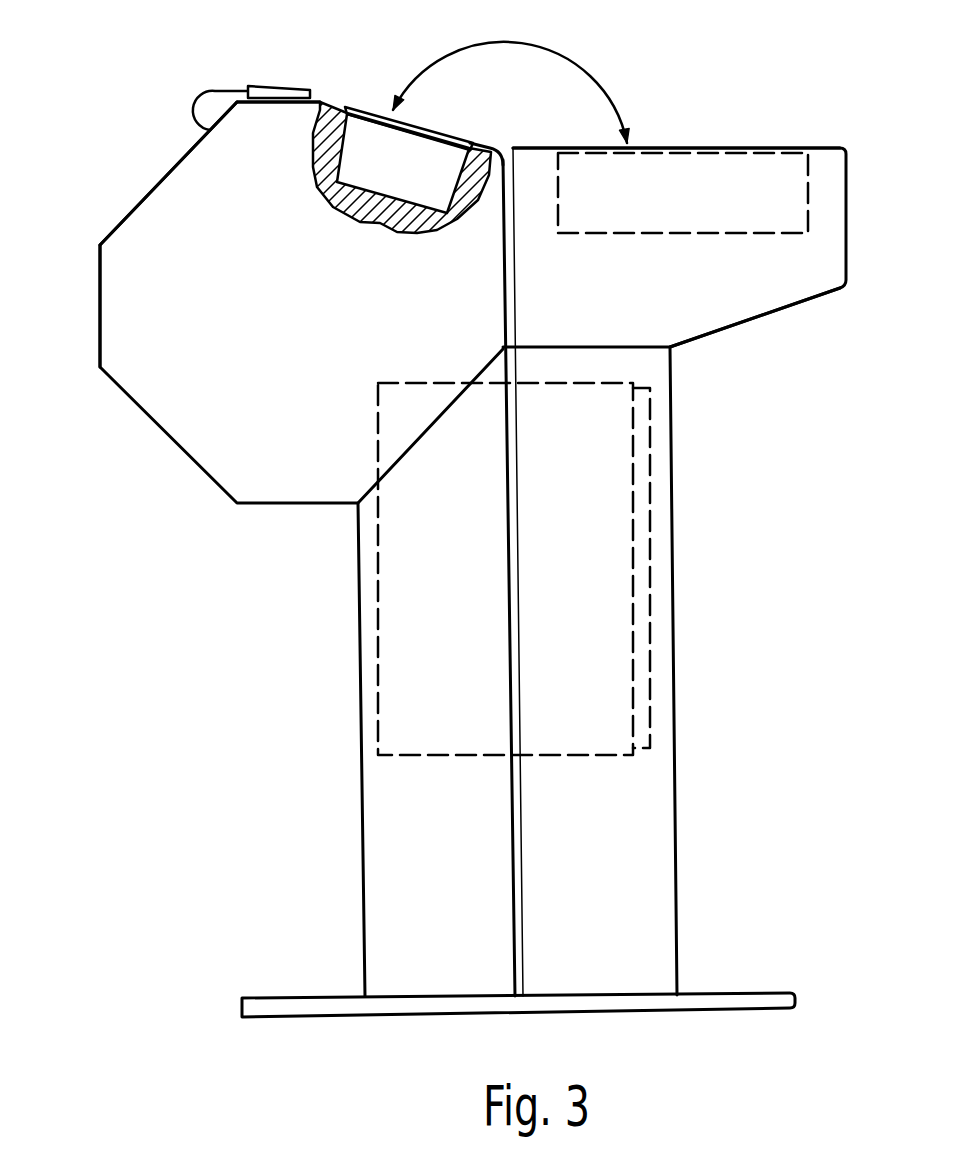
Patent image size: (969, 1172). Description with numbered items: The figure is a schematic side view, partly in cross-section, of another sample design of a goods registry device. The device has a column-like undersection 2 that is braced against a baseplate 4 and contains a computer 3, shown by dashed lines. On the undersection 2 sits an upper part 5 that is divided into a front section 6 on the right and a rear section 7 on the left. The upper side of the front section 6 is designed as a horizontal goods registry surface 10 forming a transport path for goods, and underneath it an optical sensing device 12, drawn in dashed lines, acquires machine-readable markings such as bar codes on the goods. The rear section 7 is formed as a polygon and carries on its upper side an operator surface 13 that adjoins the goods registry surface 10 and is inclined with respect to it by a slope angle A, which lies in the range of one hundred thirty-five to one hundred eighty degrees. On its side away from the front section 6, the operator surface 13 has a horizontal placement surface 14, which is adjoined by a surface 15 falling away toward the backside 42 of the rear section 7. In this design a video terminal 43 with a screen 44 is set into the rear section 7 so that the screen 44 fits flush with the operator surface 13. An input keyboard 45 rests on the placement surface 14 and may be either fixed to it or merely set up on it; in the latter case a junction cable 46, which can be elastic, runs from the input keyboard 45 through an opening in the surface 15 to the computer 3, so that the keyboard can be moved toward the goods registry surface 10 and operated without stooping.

The column-like undersection 2 is at (657, 880).
The computer 3 is at (647, 608).
The baseplate 4 is at (750, 998).
The upper part 5 is at (721, 343).
The front section 6 is at (643, 308).
The rear section 7 is at (295, 433).
The goods registry surface 10 is at (827, 143).
The optical sensing device 12 is at (763, 237).
The operator surface 13 is at (357, 110).
The placement surface 14 is at (323, 100).
The surface falling away to the rear 15 is at (157, 185).
The backside 42 is at (100, 305).
The video terminal 43 is at (411, 176).
The screen 44 is at (443, 137).
The input keyboard 45 is at (278, 100).
The junction cable 46 is at (210, 90).
The slope angle A is at (558, 50).